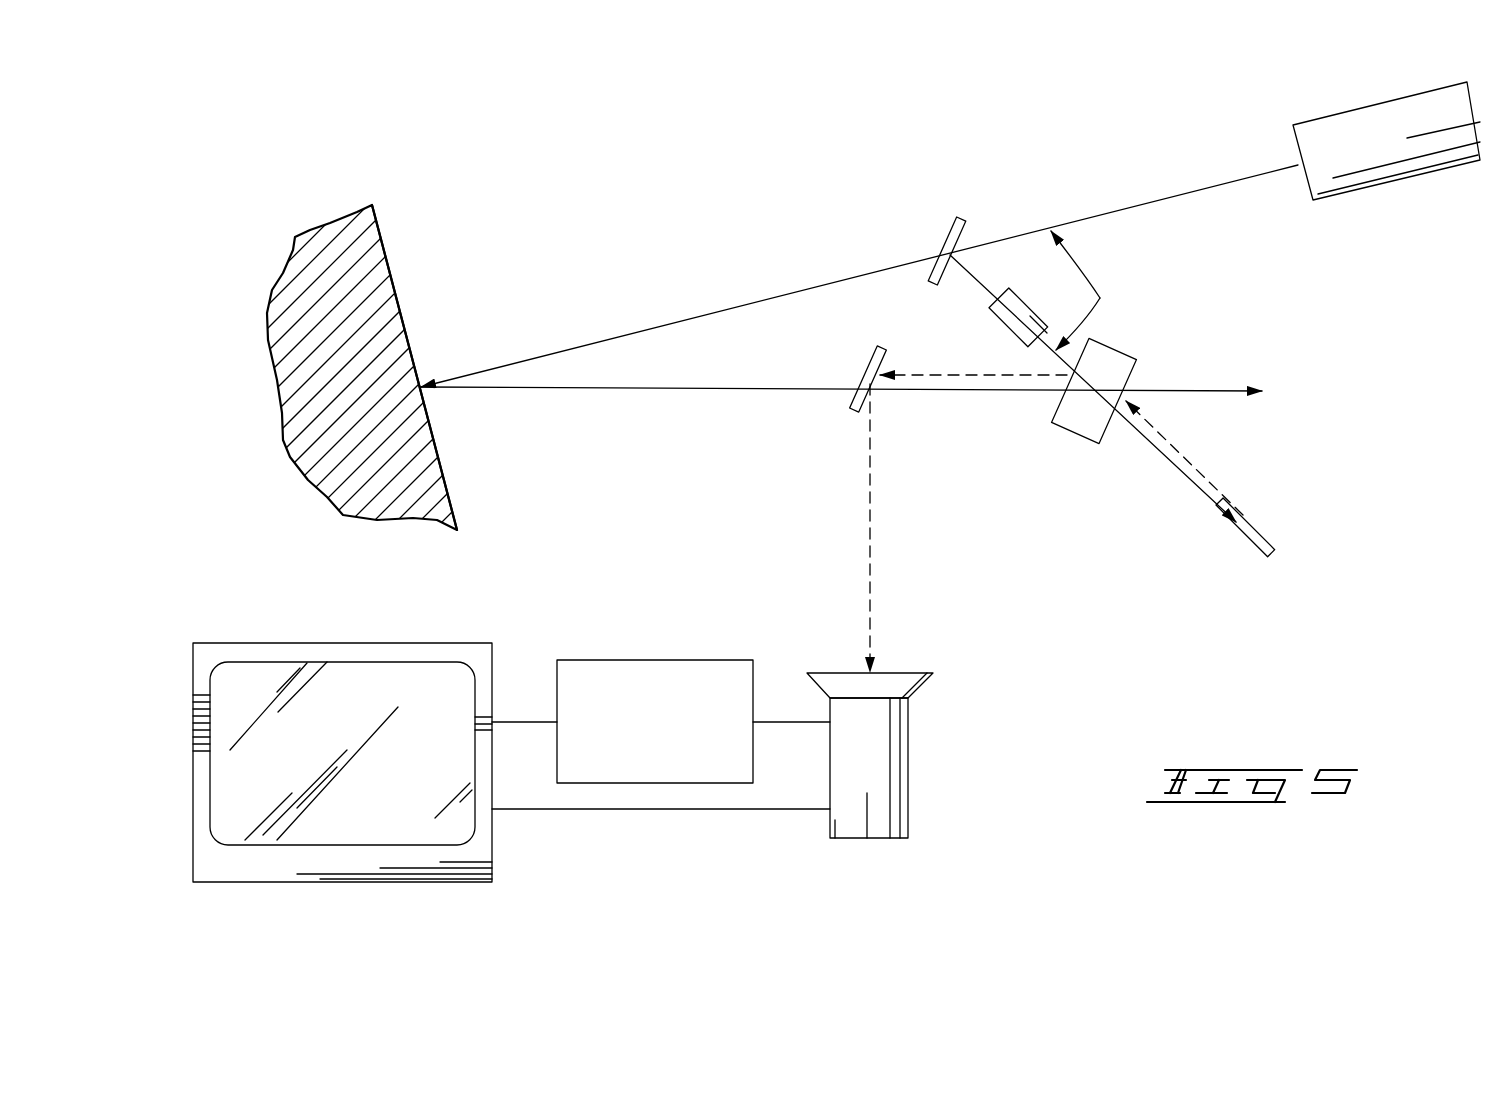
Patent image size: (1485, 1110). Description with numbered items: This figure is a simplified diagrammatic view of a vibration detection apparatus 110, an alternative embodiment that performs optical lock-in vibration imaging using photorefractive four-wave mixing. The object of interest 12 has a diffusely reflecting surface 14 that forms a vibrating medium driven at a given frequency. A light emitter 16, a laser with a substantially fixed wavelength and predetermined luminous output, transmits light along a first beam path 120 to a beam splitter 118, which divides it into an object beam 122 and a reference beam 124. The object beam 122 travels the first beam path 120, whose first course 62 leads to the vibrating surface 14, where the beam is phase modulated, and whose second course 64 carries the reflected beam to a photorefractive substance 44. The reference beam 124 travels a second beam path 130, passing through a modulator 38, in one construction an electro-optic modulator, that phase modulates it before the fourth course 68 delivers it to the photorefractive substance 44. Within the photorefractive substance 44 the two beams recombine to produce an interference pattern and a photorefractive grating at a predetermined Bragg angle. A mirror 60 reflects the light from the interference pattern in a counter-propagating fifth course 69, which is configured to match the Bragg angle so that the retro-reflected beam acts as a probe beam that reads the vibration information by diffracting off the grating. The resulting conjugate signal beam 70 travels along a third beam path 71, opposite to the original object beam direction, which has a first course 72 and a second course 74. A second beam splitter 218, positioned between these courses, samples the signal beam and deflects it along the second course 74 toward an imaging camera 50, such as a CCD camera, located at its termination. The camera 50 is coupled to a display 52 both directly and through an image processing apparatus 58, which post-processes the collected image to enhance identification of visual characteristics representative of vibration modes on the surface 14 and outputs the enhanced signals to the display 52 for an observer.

The vibration detection apparatus 110 is at (902, 98).
The object of interest 12 is at (398, 297).
The surface 14 is at (436, 441).
The light emitter 16 is at (1403, 183).
The first course 62 is at (723, 308).
The first beam path 120 is at (1120, 185).
The object beam 122 is at (828, 250).
The beam splitter 118 is at (950, 232).
The modulator 38 is at (1032, 302).
The reference beam 124 is at (982, 297).
The second beam path 130 is at (1100, 298).
The fourth course 68 is at (1047, 347).
The photorefractive substance 44 is at (1077, 433).
The fifth course 69 is at (1200, 470).
The mirror 60 is at (1263, 520).
The second beam splitter 218 is at (860, 352).
The first course 72 is at (980, 373).
The conjugate signal beam 70 is at (961, 391).
The second course 74 is at (867, 488).
The third beam path 71 is at (912, 392).
The second course 64 is at (687, 391).
The imaging camera 50 is at (880, 740).
The image processing apparatus 58 is at (635, 660).
The display 52 is at (243, 863).